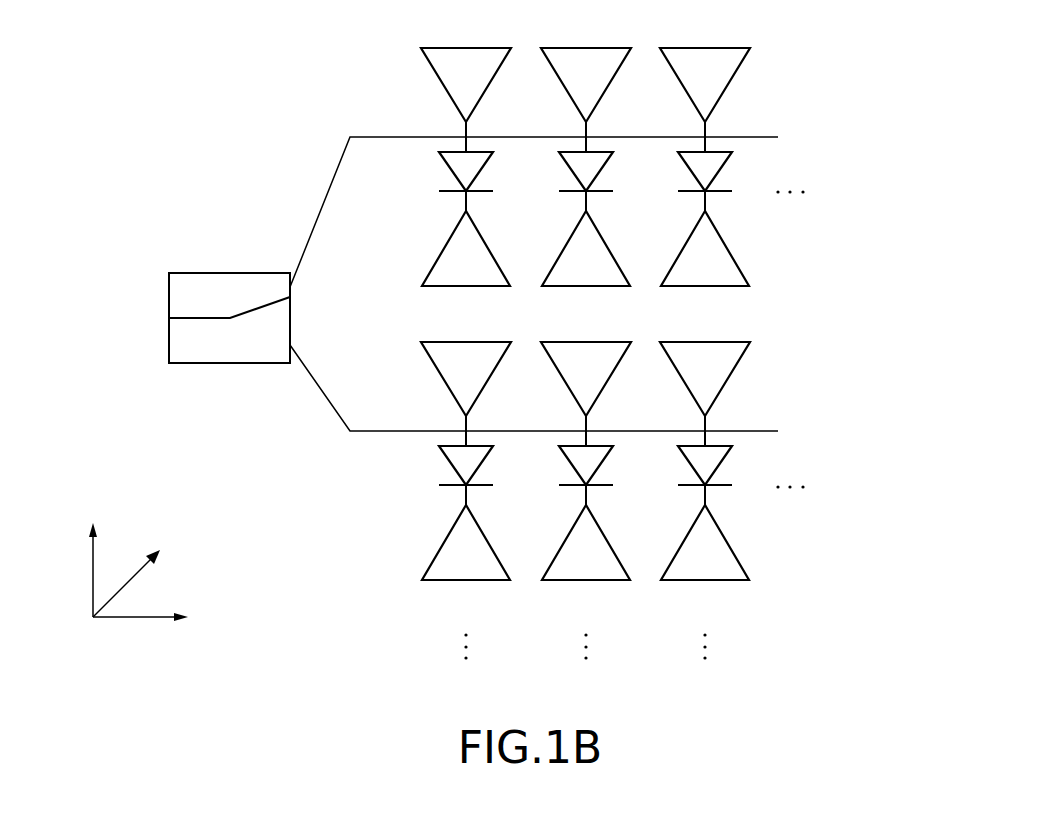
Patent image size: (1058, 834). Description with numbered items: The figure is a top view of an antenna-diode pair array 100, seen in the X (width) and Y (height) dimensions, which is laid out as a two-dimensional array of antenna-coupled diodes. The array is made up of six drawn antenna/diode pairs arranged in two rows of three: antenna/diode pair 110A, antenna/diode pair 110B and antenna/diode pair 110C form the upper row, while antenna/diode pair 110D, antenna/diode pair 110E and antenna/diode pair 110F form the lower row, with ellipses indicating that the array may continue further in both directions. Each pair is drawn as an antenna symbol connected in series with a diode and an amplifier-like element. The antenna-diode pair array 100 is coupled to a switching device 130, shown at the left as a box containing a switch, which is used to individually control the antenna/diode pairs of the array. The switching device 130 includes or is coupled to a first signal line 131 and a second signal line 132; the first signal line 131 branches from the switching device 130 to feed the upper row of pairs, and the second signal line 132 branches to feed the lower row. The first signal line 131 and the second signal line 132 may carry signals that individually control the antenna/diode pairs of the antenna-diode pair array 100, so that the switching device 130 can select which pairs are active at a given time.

The antenna-diode pair array 100 is at (820, 302).
The antenna/diode pair 110A is at (466, 152).
The antenna/diode pair 110B is at (586, 152).
The antenna/diode pair 110C is at (705, 152).
The antenna/diode pair 110D is at (466, 478).
The antenna/diode pair 110E is at (586, 478).
The antenna/diode pair 110F is at (705, 478).
The switching device 130 is at (225, 363).
The first signal line 131 is at (561, 205).
The second signal line 132 is at (561, 394).